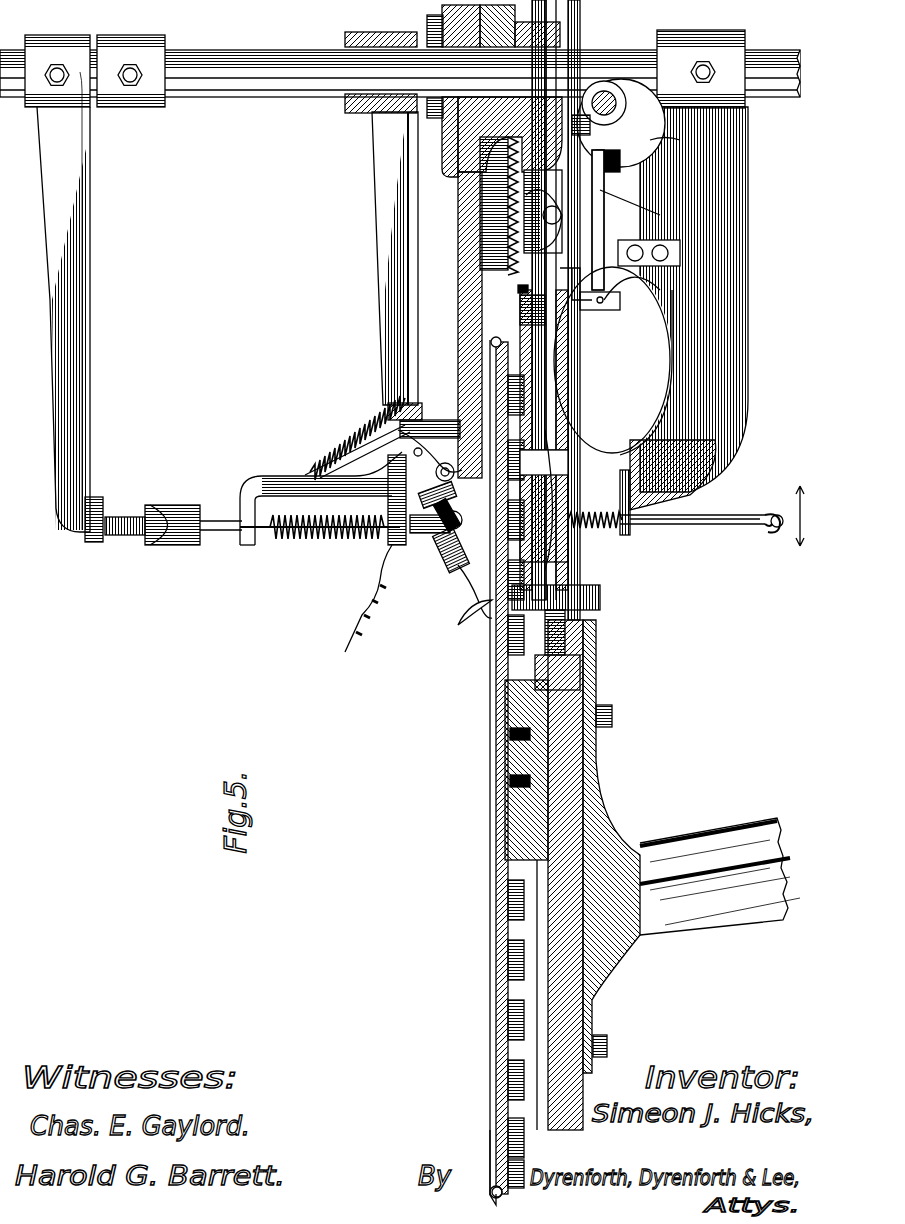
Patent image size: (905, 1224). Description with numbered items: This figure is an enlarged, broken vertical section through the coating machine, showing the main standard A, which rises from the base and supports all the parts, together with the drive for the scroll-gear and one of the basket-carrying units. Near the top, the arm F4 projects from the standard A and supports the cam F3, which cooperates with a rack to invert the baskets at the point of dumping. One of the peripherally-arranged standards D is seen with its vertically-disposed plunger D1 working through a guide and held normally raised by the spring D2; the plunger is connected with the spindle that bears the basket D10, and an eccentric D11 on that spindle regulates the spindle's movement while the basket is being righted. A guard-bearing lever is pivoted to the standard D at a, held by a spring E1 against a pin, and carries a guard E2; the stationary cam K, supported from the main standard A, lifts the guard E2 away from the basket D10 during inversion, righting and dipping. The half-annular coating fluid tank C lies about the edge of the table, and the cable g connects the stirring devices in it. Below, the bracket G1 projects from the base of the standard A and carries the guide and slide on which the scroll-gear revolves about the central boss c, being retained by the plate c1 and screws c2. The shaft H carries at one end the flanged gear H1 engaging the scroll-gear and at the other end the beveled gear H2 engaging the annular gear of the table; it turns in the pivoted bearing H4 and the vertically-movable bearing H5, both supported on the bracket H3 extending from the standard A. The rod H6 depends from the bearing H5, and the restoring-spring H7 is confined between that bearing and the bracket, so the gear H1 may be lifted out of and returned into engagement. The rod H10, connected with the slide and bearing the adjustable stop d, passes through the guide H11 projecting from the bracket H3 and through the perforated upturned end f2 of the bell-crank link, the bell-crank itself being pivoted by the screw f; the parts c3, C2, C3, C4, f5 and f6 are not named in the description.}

The main standard A is at (273, 95).
The arm F4 is at (60, 438).
The cam F3 is at (98, 517).
The peripherally-arranged standards D is at (262, 477).
The springs D2 is at (310, 540).
The springs E1 is at (342, 448).
The guards E2 is at (358, 626).
The stationary cam K is at (390, 404).
The pivot a is at (425, 415).
The vertically-disposed plungers D1 is at (428, 538).
The baskets D10 is at (448, 563).
The eccentrics D11 is at (462, 620).
The coating fluid tank C is at (540, 1080).
The central boss c is at (512, 826).
The plate c1 is at (505, 752).
The screws c2 is at (505, 796).
The rack tooth c3 is at (505, 716).
The guide C2 is at (540, 875).
The end cap C3 is at (500, 1195).
The rod C4 is at (492, 1155).
The shaft H is at (566, 440).
The flanged gear H1 is at (600, 596).
The beveled gear H2 is at (520, 312).
The bracket H3 is at (610, 335).
The pivoted bearing H4 is at (512, 150).
The vertically-movable bearing H5 is at (568, 535).
The rod H6 is at (715, 528).
The restoring-spring H7 is at (605, 535).
The rod H10 is at (605, 312).
The guide H11 is at (604, 300).
The cable g is at (811, 516).
The screw f is at (614, 120).
The upturned end f2 is at (625, 300).
The link f5 is at (662, 215).
The pin f6 is at (672, 140).
The adjustable stop d is at (612, 360).
The bracket G1 is at (722, 840).